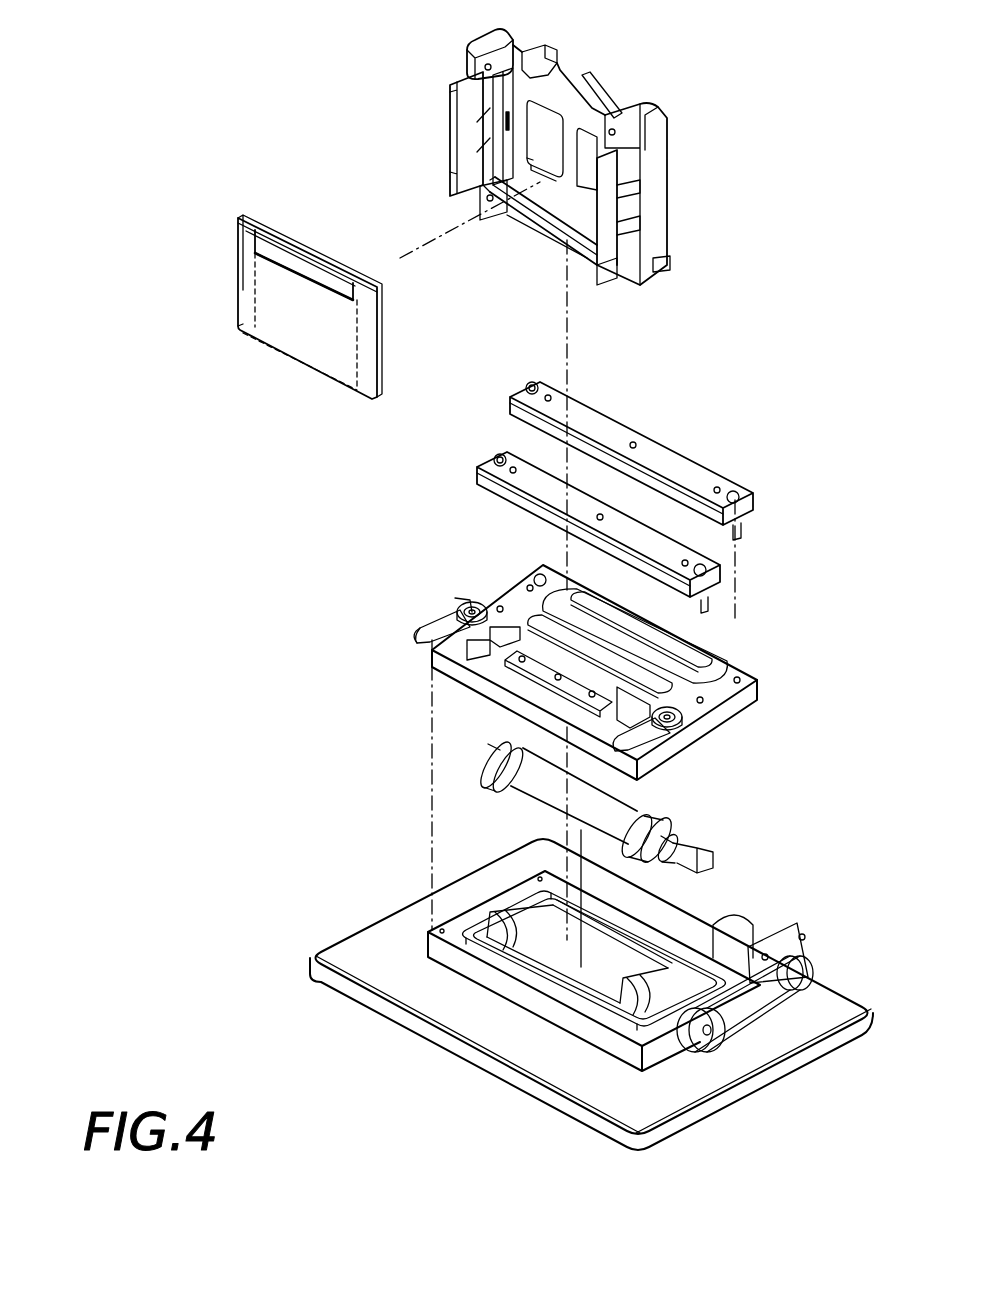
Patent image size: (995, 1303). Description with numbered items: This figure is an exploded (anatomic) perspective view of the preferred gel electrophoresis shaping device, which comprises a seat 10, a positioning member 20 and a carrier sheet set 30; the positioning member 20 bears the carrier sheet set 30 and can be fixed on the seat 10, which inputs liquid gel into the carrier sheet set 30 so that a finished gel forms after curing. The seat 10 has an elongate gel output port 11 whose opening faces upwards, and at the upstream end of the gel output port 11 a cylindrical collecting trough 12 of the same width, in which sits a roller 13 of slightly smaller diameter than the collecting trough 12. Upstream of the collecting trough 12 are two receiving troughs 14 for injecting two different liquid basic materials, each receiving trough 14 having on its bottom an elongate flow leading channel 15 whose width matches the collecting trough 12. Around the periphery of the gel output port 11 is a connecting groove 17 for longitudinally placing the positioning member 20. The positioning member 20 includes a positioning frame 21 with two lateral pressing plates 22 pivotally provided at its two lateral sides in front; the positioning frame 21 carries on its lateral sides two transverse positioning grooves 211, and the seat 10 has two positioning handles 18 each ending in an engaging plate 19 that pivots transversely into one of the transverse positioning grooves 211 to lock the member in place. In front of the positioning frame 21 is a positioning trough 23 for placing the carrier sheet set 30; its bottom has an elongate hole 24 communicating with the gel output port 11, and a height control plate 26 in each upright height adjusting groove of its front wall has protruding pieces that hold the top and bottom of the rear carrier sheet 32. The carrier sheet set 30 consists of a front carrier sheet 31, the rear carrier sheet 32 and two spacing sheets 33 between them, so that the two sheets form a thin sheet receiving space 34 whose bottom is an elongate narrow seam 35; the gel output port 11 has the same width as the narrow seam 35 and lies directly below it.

The seat 10 is at (410, 1050).
The gel output port 11 is at (540, 657).
The collecting trough 12 is at (628, 975).
The roller 13 is at (633, 812).
The receiving troughs 14 is at (723, 663).
The flow leading channels 15 is at (593, 657).
The connecting groove 17 is at (465, 618).
The positioning handles 18 is at (425, 630).
The engaging plate 19 is at (470, 601).
The positioning member 20 is at (653, 95).
The positioning frame 21 is at (668, 163).
The lateral pressing plates 22 is at (468, 137).
The positioning trough 23 is at (500, 95).
The elongate hole 24 is at (525, 200).
The height control plate 26 is at (488, 118).
The carrier sheet set 30 is at (258, 198).
The front carrier sheet 31 is at (258, 324).
The rear carrier sheet 32 is at (330, 258).
The spacing sheets 33 is at (252, 276).
The thin sheet receiving space 34 is at (308, 288).
The narrow seam 35 is at (283, 356).
The transverse positioning grooves 211 is at (675, 268).